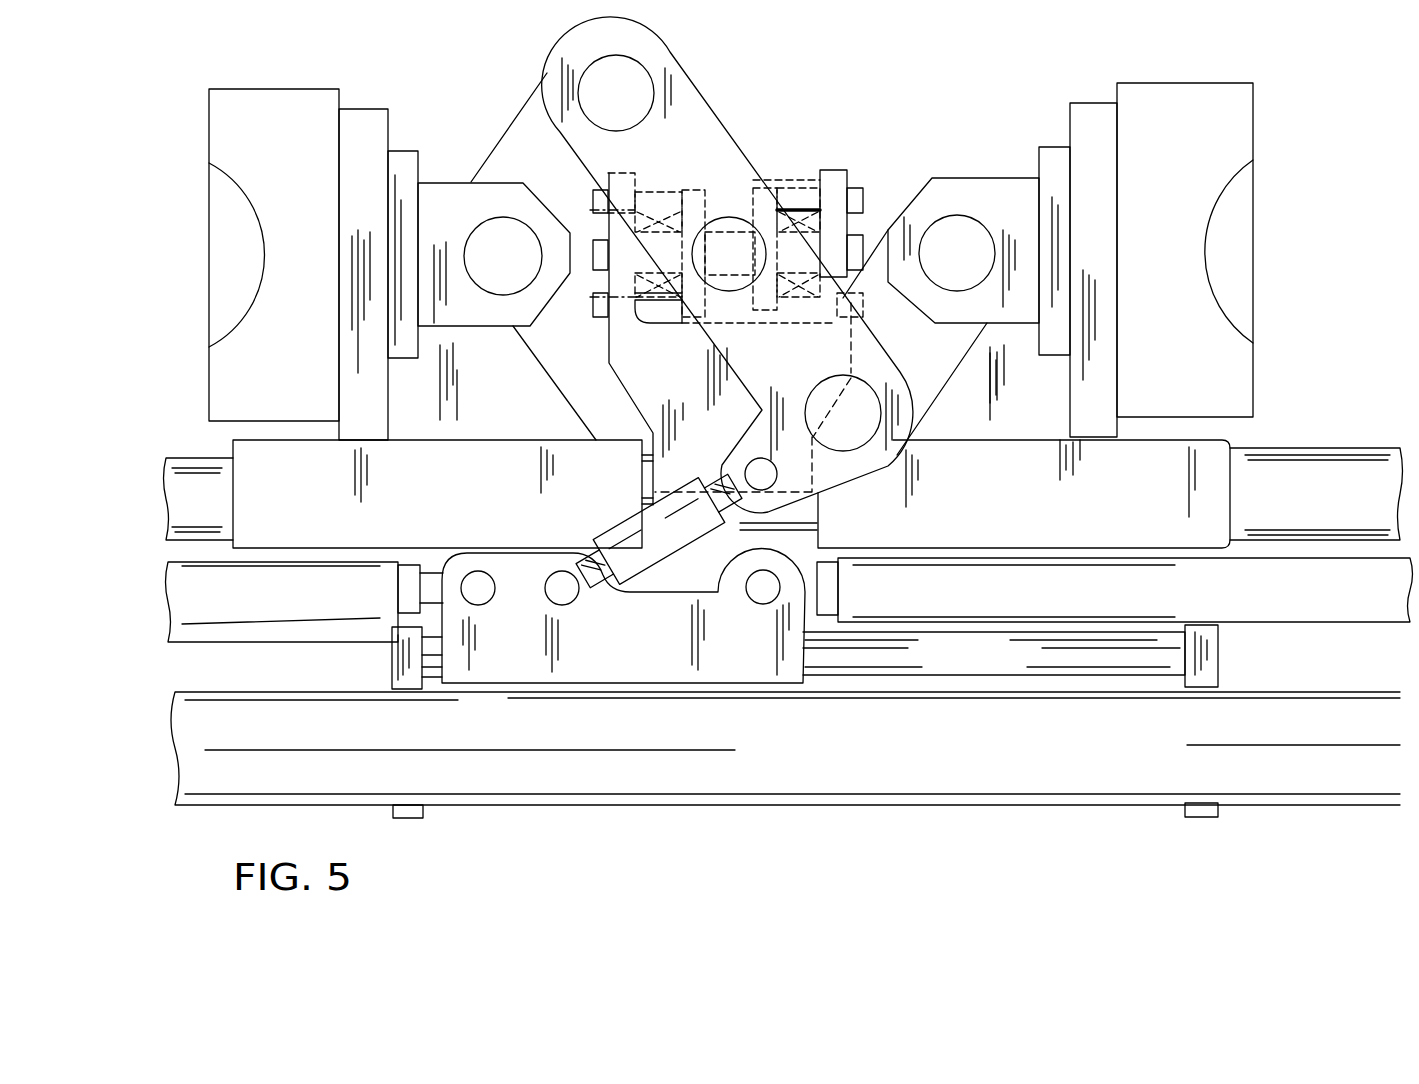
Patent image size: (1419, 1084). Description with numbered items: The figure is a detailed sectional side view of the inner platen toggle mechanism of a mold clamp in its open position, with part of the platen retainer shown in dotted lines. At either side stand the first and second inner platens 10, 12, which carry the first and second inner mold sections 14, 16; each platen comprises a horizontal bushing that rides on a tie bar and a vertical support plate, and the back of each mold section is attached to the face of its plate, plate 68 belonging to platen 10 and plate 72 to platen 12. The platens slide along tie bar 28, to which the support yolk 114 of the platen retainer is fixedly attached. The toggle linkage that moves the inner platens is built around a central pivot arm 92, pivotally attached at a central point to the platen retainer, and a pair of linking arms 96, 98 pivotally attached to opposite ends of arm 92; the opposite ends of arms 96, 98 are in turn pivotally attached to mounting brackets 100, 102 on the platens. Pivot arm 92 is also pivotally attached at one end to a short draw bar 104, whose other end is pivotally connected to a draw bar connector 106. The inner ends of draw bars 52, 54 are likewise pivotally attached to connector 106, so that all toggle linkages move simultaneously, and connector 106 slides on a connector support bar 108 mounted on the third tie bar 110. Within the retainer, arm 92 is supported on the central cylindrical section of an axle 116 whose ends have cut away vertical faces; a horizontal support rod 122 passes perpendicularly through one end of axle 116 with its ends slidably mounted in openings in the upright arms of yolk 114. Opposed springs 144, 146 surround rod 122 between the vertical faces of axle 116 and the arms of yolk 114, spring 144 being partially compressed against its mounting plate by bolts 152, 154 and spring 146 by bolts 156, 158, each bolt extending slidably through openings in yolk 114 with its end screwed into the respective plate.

The first inner platen 10 is at (452, 504).
The second inner platen 12 is at (1038, 504).
The first inner mold section 14 is at (292, 173).
The second inner mold section 16 is at (1182, 217).
The tie bar 28 is at (1327, 504).
The draw bar 52 is at (1065, 612).
The draw bar 54 is at (298, 607).
The plate 68 is at (377, 210).
The plate 72 is at (1108, 217).
The central pivot arm 92 is at (682, 161).
The linking arm 96 is at (940, 372).
The linking arm 98 is at (542, 167).
The mounting bracket 100 is at (1025, 217).
The mounting bracket 102 is at (470, 223).
The short draw bar 104 is at (677, 547).
The draw bar connector 106 is at (642, 652).
The connector support bar 108 is at (985, 672).
The third tie bar 110 is at (1119, 762).
The support yolk 114 is at (682, 394).
The axle 116 is at (730, 215).
The support rod 122 is at (866, 237).
The spring 144 is at (796, 193).
The spring 146 is at (668, 193).
The bolt 152 is at (812, 208).
The bolt 154 is at (783, 310).
The bolt 156 is at (647, 197).
The bolt 158 is at (596, 303).